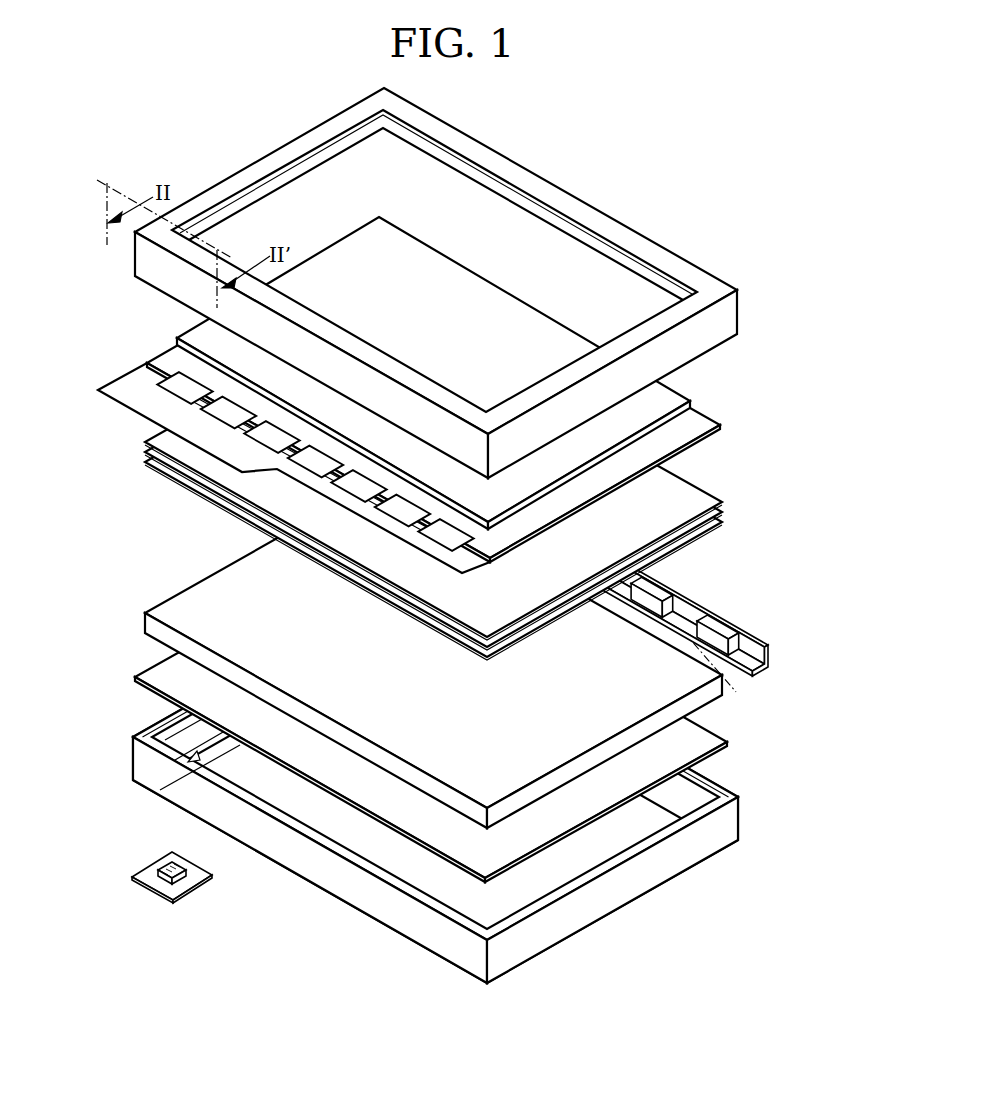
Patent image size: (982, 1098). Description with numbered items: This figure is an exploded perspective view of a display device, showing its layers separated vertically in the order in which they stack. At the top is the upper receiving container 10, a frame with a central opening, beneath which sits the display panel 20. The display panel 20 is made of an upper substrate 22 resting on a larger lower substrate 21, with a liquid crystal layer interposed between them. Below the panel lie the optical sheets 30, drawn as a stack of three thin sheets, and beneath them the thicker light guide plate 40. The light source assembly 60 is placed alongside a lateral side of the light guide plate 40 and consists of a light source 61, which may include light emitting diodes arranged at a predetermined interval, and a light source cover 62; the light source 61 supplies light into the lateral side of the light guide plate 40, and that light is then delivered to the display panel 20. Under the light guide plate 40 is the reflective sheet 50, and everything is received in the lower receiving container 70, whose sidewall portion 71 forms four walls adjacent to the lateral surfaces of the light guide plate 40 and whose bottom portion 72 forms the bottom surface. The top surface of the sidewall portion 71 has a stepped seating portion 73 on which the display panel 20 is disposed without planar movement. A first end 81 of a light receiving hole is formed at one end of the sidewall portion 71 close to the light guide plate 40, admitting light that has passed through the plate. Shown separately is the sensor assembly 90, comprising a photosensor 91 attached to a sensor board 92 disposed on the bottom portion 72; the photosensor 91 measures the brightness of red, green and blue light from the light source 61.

The upper receiving container 10 is at (720, 323).
The display panel 20 is at (459, 395).
The lower substrate 21 is at (697, 421).
The upper substrate 22 is at (667, 402).
The optical sheets 30 is at (727, 498).
The light guide plate 40 is at (692, 700).
The reflective sheet 50 is at (700, 737).
The light source assembly 60 is at (731, 616).
The light source 61 is at (748, 627).
The light source cover 62 is at (773, 653).
The lower receiving container 70 is at (455, 788).
The sidewall portion 71 is at (185, 747).
The bottom portion 72 is at (193, 767).
The seating portion 73 is at (185, 730).
The first end 81 is at (170, 757).
The sensor assembly 90 is at (124, 877).
The photosensor 91 is at (163, 857).
The sensor board 92 is at (157, 880).